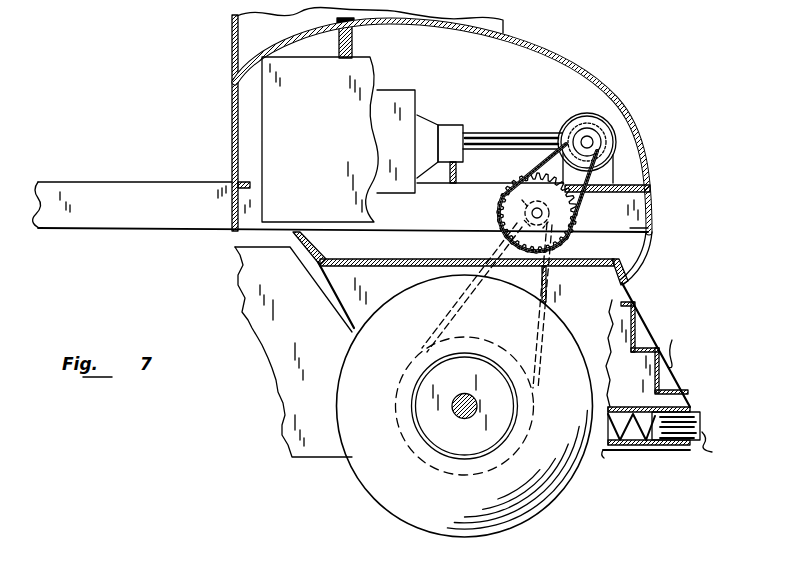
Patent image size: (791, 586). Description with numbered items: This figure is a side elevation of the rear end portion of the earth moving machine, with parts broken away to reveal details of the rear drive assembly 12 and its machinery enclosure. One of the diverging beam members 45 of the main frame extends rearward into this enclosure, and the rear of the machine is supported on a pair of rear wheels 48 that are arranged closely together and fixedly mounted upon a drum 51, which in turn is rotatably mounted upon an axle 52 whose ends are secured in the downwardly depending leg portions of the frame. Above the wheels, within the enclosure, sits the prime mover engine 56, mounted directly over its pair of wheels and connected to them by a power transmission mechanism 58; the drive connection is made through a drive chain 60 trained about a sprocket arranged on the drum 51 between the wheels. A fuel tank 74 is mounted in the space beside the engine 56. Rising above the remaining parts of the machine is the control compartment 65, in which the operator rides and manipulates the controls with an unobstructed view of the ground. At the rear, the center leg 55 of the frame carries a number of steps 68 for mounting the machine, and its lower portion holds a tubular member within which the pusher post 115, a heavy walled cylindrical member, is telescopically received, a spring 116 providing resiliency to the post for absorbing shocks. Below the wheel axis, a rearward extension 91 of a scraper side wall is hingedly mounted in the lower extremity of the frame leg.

The rear drive assembly 12 is at (638, 67).
The beam member 45 is at (132, 182).
The pair of rear wheels 48 is at (403, 515).
The drum 51 is at (430, 445).
The axle 52 is at (477, 406).
The center leg 55 is at (626, 452).
The prime mover engine 56 is at (401, 150).
The power transmission mechanism 58 is at (573, 119).
The drive chain 60 is at (548, 285).
The control compartment 65 is at (237, 33).
The steps 68 is at (655, 343).
The fuel tank 74 is at (326, 150).
The rearward extension 91 is at (330, 453).
The pusher post 115 is at (695, 444).
The spring 116 is at (650, 440).